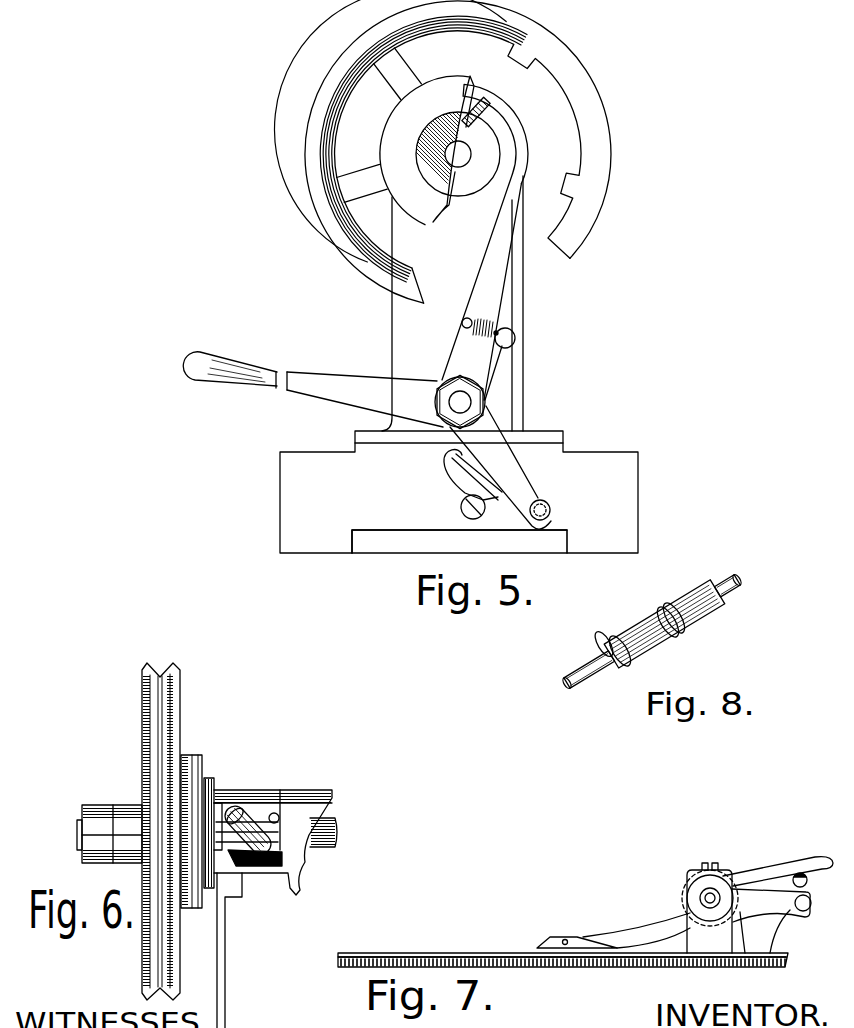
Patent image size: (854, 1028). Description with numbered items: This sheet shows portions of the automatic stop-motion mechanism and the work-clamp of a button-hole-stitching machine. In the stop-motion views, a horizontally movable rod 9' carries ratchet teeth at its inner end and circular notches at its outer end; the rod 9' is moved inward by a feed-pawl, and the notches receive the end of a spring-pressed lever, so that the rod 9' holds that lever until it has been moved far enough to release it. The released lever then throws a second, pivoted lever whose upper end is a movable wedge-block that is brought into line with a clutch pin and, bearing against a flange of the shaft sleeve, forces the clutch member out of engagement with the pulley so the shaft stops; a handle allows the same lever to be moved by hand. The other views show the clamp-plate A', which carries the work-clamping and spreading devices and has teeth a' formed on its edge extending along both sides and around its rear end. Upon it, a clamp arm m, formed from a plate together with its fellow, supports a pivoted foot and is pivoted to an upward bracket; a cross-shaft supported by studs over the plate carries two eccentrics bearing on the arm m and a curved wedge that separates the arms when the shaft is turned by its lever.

In FIG. 5, the rod 9' is at (551, 508).
In FIG. 7, the clamp-plate A' is at (563, 950).
In FIG. 7, the teeth a' is at (562, 975).
In FIG. 7, the arm m is at (649, 937).